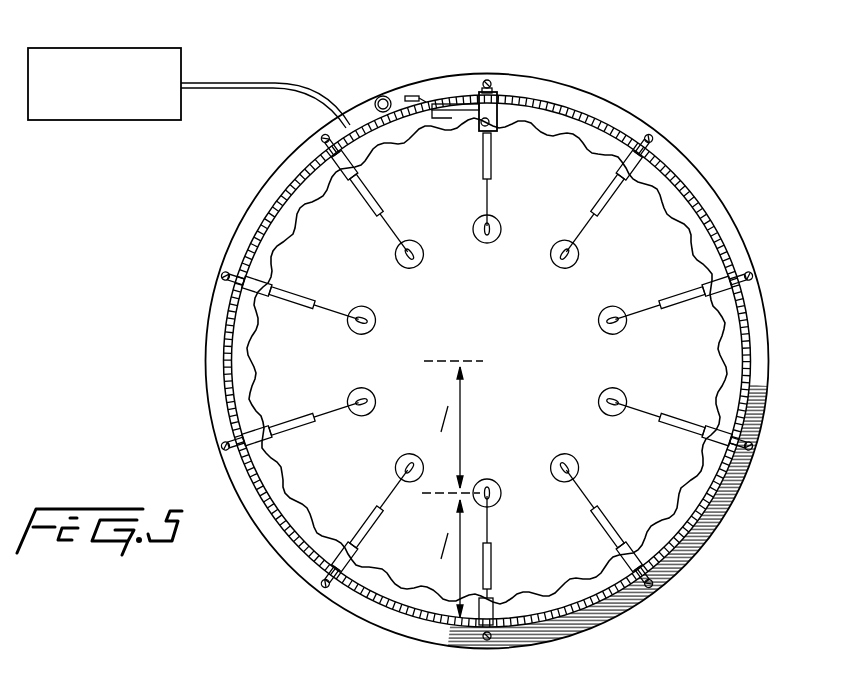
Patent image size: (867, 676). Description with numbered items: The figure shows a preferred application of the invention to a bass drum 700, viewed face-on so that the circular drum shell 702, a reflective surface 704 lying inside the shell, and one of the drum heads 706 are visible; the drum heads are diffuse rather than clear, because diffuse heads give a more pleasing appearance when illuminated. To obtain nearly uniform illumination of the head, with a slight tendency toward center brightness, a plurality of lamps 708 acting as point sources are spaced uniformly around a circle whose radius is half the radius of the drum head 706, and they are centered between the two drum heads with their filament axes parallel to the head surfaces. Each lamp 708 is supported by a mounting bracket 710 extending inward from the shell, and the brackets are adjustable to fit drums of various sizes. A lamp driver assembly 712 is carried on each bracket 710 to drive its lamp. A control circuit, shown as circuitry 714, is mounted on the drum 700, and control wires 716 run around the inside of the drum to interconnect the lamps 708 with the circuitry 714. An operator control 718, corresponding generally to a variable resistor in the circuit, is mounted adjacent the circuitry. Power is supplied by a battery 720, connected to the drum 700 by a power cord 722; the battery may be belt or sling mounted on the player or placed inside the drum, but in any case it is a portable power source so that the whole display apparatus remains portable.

The bass drum 700 is at (604, 96).
The drum shell 702 is at (707, 212).
The reflective surface 704 is at (640, 590).
The drum head 706 is at (635, 468).
The lamp 708 is at (623, 391).
The mounting bracket 710 is at (648, 158).
The lamp driver assembly 712 is at (668, 415).
The circuitry 714 is at (478, 94).
The control wires 716 is at (257, 327).
The operator control 718 is at (416, 96).
The battery 720 is at (75, 115).
The power cord 722 is at (250, 86).